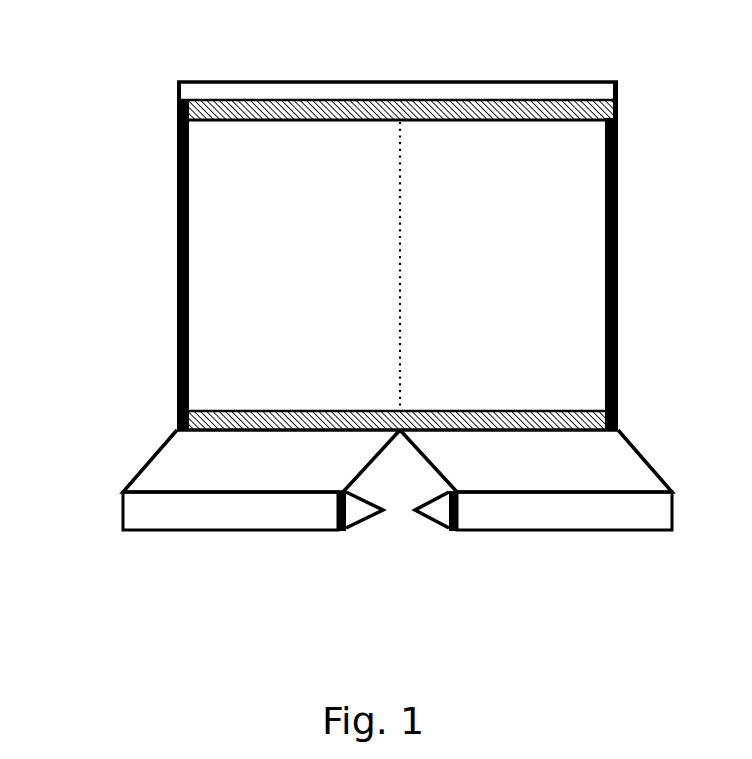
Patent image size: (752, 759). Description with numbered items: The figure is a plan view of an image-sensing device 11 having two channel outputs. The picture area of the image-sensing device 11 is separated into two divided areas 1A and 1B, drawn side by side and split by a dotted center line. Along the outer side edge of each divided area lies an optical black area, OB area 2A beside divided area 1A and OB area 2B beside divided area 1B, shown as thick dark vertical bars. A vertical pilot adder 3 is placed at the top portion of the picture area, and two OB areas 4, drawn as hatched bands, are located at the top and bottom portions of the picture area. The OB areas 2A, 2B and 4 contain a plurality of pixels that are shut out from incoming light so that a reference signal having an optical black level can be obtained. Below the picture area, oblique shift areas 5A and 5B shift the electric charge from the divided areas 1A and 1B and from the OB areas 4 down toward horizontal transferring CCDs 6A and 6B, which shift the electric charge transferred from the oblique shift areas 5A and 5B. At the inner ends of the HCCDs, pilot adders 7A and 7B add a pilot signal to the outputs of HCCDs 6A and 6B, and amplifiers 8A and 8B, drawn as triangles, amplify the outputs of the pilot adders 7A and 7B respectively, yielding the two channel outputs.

The image-sensing device 11 is at (78, 110).
The divided area 1A is at (216, 312).
The divided area 1B is at (573, 297).
The optical black area 2A is at (178, 216).
The optical black area 2B is at (618, 187).
The vertical pilot adder 3 is at (322, 92).
The optical black area 4 is at (460, 100).
The oblique shift area 5A is at (172, 461).
The oblique shift area 5B is at (637, 472).
The horizontal transferring CCD 6A is at (186, 515).
The horizontal transferring CCD 6B is at (648, 510).
The pilot adder 7A is at (340, 524).
The pilot adder 7B is at (462, 526).
The amplifier 8A is at (372, 524).
The amplifier 8B is at (428, 530).